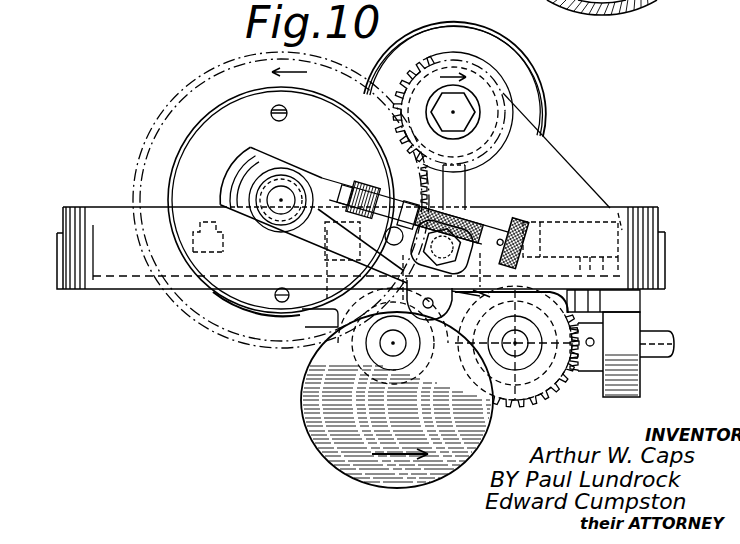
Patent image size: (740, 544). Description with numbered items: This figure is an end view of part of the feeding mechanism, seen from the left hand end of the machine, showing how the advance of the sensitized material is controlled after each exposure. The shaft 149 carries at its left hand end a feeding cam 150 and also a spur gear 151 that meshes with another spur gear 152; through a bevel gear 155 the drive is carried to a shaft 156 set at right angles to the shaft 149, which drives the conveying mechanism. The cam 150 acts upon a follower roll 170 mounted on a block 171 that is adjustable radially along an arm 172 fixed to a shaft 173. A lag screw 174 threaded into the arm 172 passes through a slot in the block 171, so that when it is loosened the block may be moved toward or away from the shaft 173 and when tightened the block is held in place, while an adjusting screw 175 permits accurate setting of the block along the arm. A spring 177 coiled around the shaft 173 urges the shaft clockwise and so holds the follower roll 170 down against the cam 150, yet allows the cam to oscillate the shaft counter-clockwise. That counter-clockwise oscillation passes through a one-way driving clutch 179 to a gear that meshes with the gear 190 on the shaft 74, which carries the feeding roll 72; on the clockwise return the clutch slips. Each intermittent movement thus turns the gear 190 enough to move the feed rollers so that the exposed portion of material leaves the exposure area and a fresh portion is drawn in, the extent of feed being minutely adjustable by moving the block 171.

The feeding roll 72 is at (540, 87).
The shaft 74 is at (470, 108).
The shaft 149 is at (391, 350).
The feeding cam 150 is at (307, 405).
The spur gear 151 is at (437, 398).
The spur gear 152 is at (543, 403).
The bevel gear 155 is at (543, 263).
The shaft 156 is at (660, 334).
The follower roll 170 is at (458, 313).
The block 171 is at (468, 212).
The arm 172 is at (340, 186).
The shaft 173 is at (284, 192).
The lag screw 174 is at (446, 226).
The adjusting screw 175 is at (533, 246).
The spring 177 is at (278, 232).
The one-way driving clutch 179 is at (281, 200).
The gear 190 is at (413, 82).